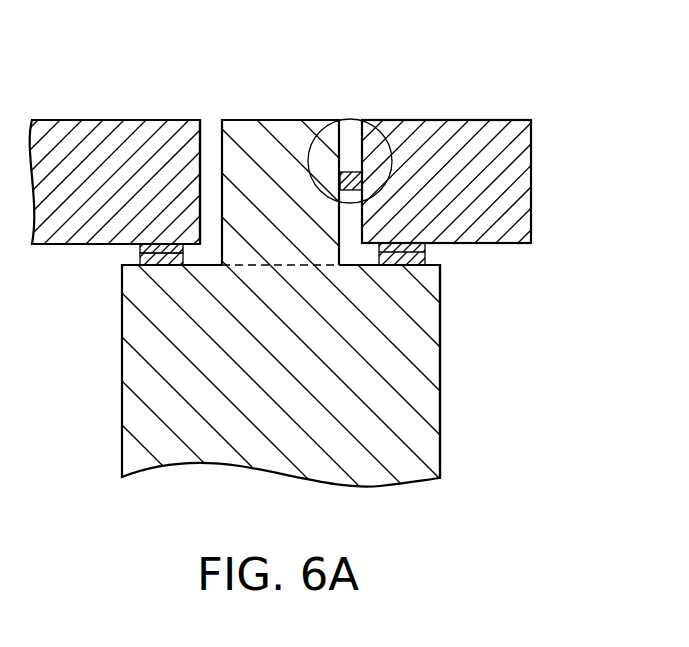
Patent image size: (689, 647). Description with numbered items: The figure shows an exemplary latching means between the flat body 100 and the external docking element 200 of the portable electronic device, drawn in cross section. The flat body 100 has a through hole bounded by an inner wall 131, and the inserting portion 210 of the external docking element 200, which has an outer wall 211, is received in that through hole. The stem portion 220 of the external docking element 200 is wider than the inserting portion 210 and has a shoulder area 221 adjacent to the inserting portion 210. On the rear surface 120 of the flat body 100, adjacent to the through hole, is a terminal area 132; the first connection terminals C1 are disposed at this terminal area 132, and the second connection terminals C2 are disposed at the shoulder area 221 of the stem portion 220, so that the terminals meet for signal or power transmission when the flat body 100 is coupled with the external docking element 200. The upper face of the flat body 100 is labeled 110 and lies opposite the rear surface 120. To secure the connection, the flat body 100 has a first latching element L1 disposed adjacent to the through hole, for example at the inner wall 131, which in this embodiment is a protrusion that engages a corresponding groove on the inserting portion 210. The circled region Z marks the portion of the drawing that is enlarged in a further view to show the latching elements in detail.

The flat body 100 is at (512, 153).
The top surface of first substrate 110 is at (499, 112).
The rear surface 120 is at (510, 247).
The inner wall 131 is at (204, 178).
The terminal area 132 is at (406, 249).
The external docking element 200 is at (417, 358).
The inserting portion 210 is at (293, 124).
The outer wall 211 is at (219, 119).
The stem portion 220 is at (440, 422).
The shoulder area 221 is at (370, 257).
The Z portion Z is at (352, 119).
The first latching element L1 is at (364, 186).
The first connection terminals C1 is at (139, 246).
The second connection terminals C2 is at (157, 262).